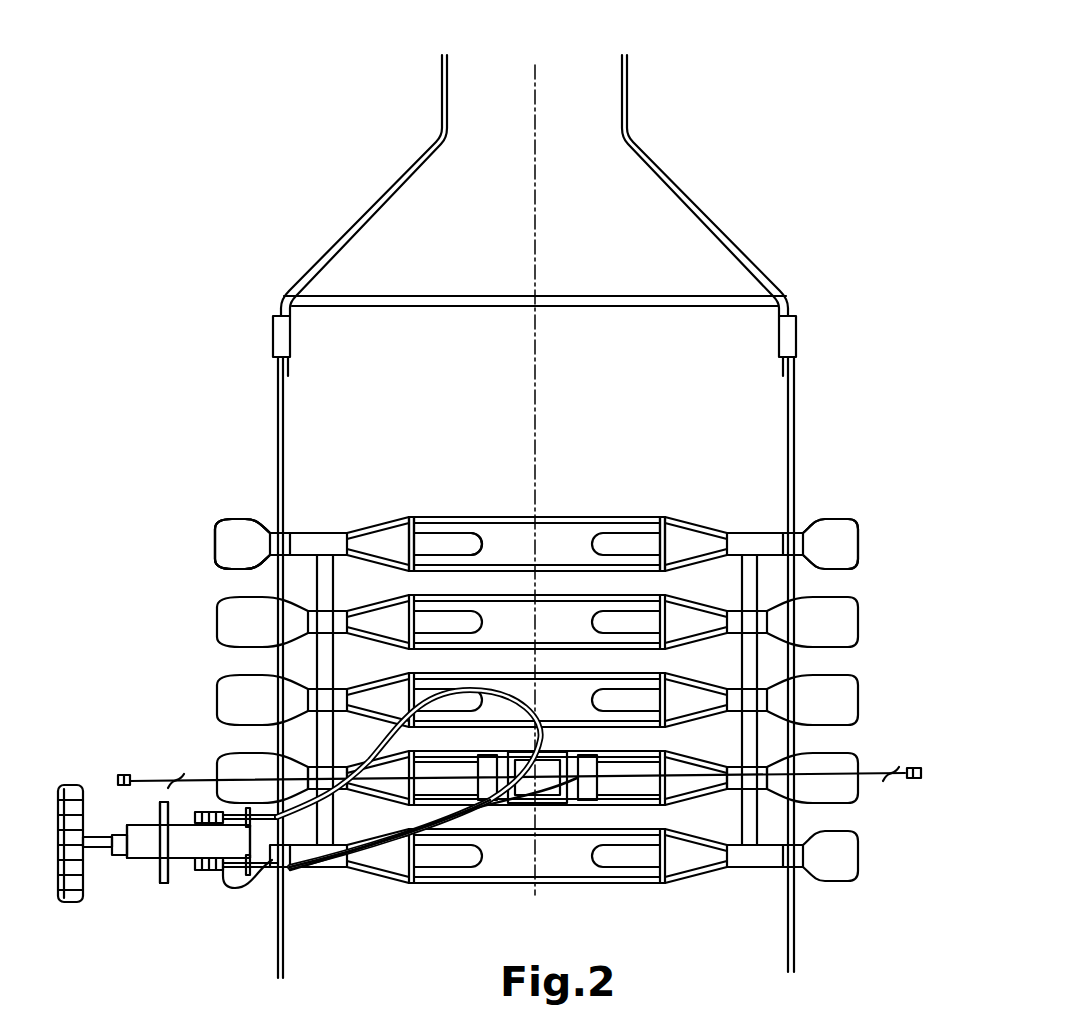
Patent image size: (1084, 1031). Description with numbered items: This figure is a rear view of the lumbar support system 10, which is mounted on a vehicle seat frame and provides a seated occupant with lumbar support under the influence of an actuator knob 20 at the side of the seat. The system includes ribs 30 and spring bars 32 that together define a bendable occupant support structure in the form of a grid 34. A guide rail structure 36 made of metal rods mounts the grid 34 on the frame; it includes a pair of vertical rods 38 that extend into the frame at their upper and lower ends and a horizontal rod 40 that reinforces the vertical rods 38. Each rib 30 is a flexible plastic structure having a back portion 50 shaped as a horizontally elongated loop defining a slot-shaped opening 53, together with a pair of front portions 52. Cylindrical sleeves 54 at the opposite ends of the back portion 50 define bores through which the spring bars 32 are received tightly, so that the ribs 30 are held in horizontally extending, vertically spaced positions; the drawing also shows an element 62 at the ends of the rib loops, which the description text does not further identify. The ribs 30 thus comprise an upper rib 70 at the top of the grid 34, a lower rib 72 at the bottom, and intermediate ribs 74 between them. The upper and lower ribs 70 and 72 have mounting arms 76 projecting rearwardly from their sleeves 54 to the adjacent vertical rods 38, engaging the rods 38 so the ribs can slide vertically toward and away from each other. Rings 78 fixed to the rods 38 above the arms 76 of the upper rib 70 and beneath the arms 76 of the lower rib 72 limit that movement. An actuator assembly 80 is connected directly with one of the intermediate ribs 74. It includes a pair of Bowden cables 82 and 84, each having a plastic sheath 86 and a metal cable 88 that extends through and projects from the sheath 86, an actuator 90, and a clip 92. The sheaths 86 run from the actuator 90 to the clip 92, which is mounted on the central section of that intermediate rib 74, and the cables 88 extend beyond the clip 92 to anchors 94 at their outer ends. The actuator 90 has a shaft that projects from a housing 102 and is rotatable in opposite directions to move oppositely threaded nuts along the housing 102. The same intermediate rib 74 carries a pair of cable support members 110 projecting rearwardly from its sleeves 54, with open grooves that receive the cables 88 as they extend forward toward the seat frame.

The lumbar support system 10 is at (188, 328).
The actuator knob 20 is at (62, 785).
The ribs 30 is at (207, 590).
The spring bars 32 is at (322, 663).
The grid 34 is at (198, 630).
The guide rail structure 36 is at (714, 205).
The vertical rods 38 is at (285, 414).
The horizontal rod 40 is at (412, 295).
The back portion 50 is at (596, 516).
The front portions 52 is at (228, 542).
The slot-shaped opening 53 is at (546, 555).
The cylindrical sleeves 54 is at (312, 548).
The end plate 62 is at (405, 545).
The upper rib 70 is at (428, 520).
The lower rib 72 is at (470, 893).
The intermediate ribs 74 is at (856, 760).
The mounting arms 76 is at (290, 538).
The rings 78 is at (272, 540).
The actuator assembly 80 is at (155, 930).
The Bowden cable 82 is at (508, 682).
The Bowden cable 84 is at (482, 816).
The plastic sheath 86 is at (512, 688).
The metal cable 88 is at (202, 779).
The actuator 90 is at (138, 878).
The clip 92 is at (588, 797).
The anchors 94 is at (122, 775).
The housing 102 is at (188, 845).
The cable support members 110 is at (318, 778).